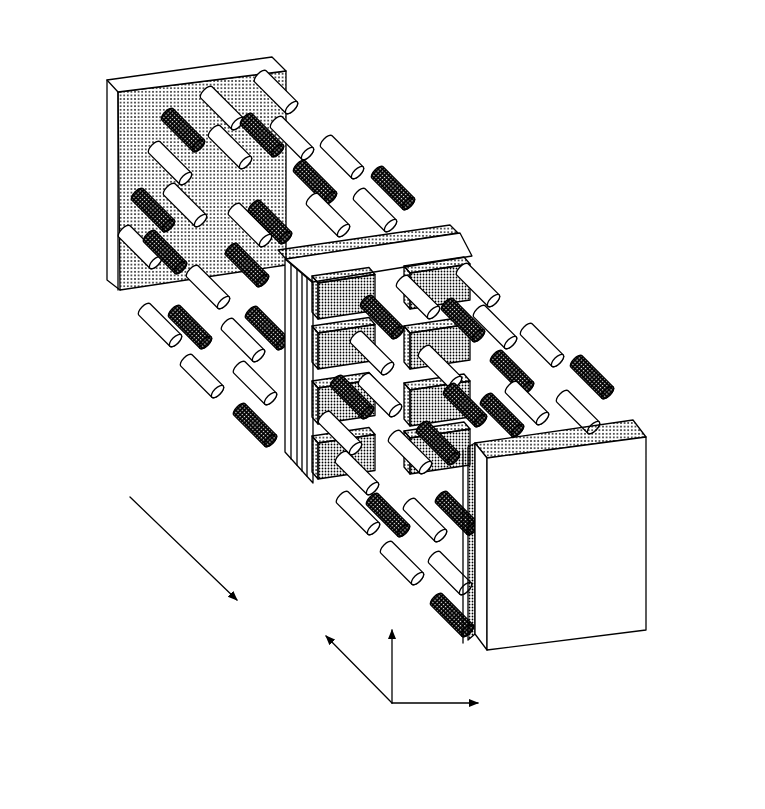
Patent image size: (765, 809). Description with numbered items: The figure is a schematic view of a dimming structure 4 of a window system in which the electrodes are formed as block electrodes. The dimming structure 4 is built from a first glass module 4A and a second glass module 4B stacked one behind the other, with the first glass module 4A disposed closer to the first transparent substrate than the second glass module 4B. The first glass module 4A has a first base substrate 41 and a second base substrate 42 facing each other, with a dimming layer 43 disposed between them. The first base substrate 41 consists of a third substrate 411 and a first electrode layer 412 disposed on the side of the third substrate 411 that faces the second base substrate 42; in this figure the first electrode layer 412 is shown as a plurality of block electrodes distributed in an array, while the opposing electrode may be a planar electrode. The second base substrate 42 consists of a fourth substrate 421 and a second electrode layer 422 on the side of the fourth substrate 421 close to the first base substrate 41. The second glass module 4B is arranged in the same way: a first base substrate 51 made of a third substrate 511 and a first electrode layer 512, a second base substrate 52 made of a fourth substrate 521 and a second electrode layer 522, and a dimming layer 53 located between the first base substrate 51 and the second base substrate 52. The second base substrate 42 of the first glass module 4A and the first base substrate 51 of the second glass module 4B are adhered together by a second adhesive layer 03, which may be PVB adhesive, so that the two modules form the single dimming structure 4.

The dimming structure 4 is at (80, 46).
The first base substrate 41 is at (280, 63).
The third substrate 411 is at (107, 279).
The first electrode layer 412 is at (120, 291).
The second base substrate 42 is at (446, 227).
The fourth substrate 421 is at (293, 459).
The second electrode layer 422 is at (287, 447).
The dimming layer 43 is at (319, 76).
The first glass module 4A is at (322, 29).
The second glass module 4B is at (517, 224).
The first base substrate 51 is at (484, 270).
The third substrate 511 is at (306, 472).
The first electrode layer 512 is at (315, 478).
The second base substrate 52 is at (638, 418).
The fourth substrate 521 is at (476, 647).
The second electrode layer 522 is at (473, 634).
The dimming layer 53 is at (511, 266).
The second adhesive layer 03 is at (300, 465).